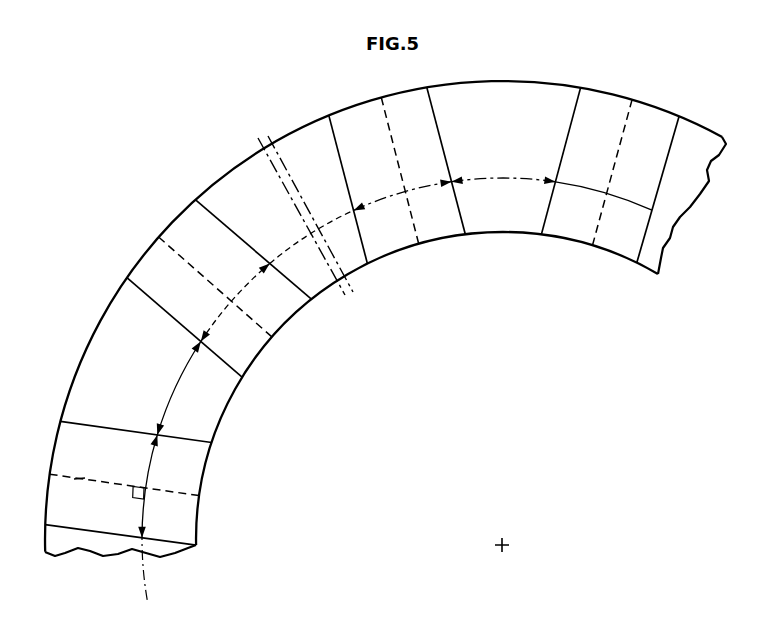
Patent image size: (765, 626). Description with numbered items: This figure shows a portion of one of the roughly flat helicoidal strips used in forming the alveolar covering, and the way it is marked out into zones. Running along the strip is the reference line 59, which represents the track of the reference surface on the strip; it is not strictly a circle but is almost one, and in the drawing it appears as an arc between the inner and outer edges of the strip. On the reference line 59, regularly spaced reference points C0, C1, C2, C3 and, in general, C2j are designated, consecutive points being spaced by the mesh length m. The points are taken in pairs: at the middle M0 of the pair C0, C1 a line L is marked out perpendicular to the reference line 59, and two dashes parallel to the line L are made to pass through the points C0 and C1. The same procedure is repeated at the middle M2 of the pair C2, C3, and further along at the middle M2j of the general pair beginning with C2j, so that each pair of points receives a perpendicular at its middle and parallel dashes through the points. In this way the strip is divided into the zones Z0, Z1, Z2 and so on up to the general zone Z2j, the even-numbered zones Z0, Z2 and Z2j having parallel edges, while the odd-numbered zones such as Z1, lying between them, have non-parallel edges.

The reference line 59 is at (143, 593).
The zone Z0 is at (187, 508).
The zone Z1 is at (213, 395).
The zone Z2 is at (247, 345).
The zone Z2j is at (432, 228).
The reference point C0 is at (153, 531).
The reference point C1 is at (169, 431).
The reference point C2 is at (213, 343).
The reference point C3 is at (275, 261).
The reference point C2j is at (369, 221).
The middle point M0 is at (140, 481).
The middle point M2 is at (229, 293).
The middle point M2j is at (408, 180).
The line L is at (79, 481).